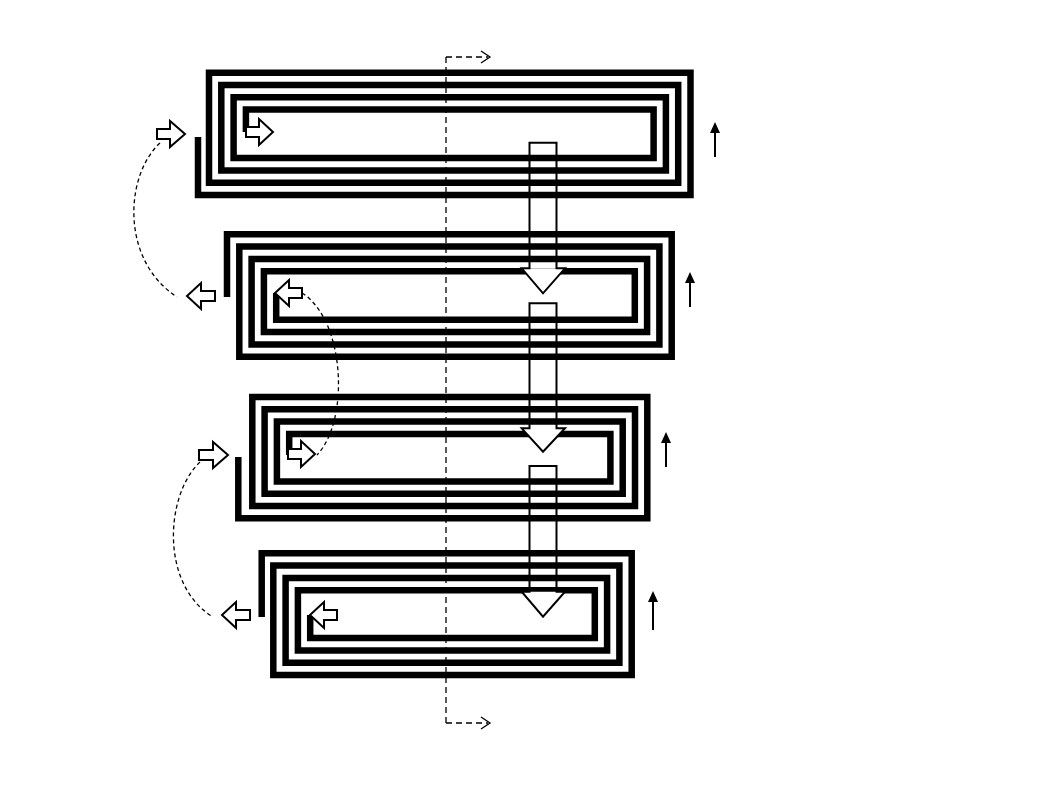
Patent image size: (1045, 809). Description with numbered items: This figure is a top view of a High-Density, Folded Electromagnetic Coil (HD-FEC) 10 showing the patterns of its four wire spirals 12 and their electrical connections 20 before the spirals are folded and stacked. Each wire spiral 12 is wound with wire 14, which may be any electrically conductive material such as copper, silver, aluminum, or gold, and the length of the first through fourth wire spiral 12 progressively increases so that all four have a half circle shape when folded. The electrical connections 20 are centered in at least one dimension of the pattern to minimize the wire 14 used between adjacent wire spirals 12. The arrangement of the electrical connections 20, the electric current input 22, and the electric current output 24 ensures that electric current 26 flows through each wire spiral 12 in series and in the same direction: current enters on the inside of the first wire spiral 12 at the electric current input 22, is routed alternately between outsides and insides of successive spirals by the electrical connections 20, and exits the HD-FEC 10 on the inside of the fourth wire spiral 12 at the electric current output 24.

The High-Density, Folded Electromagnetic Coil (HD-FEC) 10 is at (178, 70).
The wire spiral 12 is at (547, 385).
The wire 14 is at (697, 113).
The electrical connection 20 is at (335, 368).
The electric current input 22 is at (398, 615).
The electric current output 24 is at (334, 132).
The electric current 26 is at (705, 376).